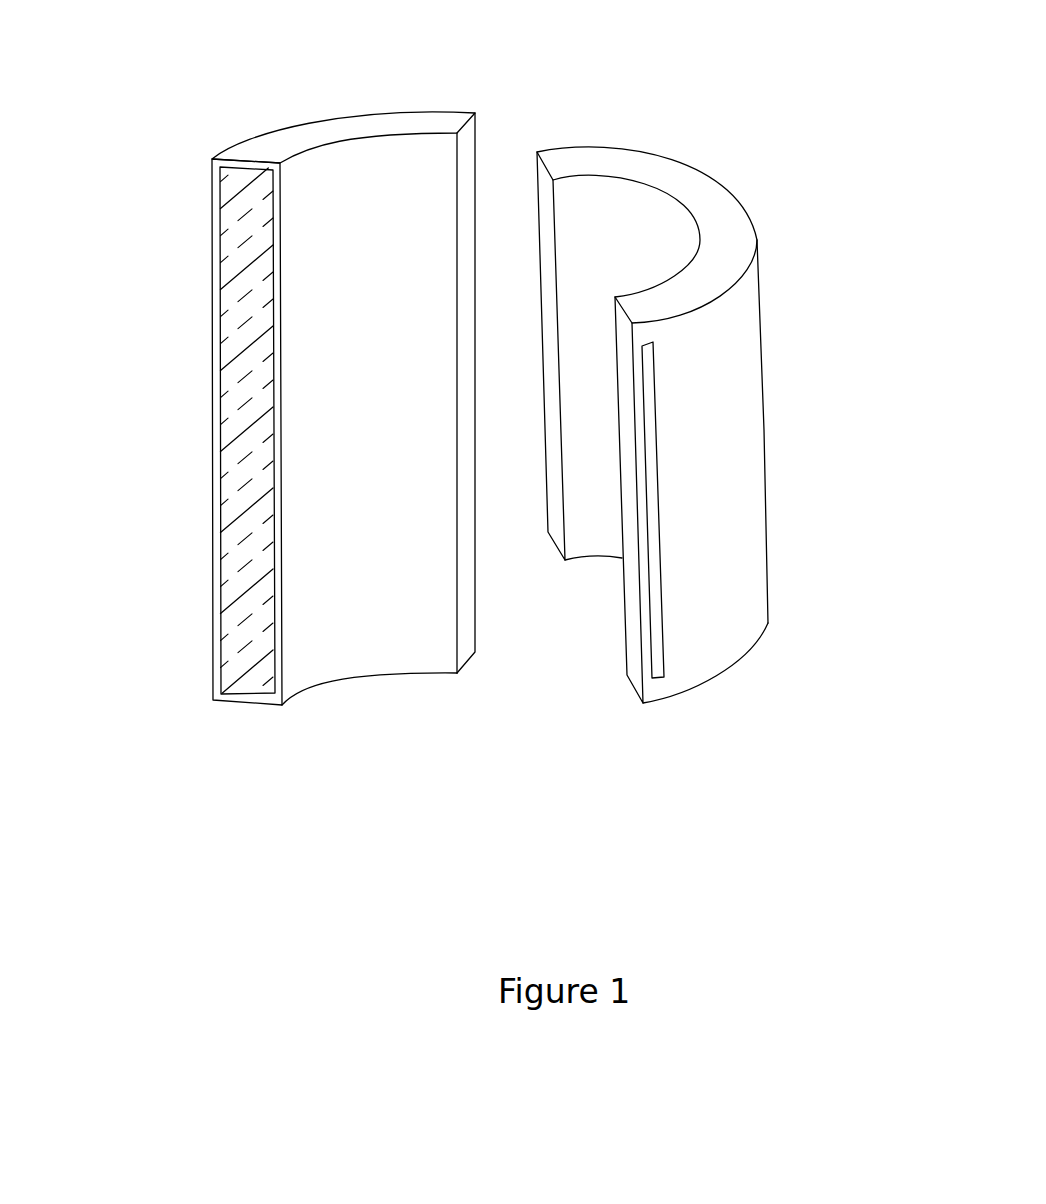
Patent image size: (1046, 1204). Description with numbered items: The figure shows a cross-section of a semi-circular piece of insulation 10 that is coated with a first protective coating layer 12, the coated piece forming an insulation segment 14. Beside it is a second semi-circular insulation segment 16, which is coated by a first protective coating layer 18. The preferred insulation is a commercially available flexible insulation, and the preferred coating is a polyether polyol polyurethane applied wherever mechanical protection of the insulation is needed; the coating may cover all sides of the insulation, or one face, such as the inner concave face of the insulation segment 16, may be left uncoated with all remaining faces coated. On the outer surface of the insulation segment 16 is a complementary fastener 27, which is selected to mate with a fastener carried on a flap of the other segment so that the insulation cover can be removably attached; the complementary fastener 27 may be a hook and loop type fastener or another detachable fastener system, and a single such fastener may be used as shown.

The insulation 10 is at (245, 318).
The first protective coating layer 12 is at (218, 590).
The insulation segment 14 is at (238, 98).
The second semi-circular insulation segment 16 is at (742, 165).
The first protective coating layer 18 is at (723, 508).
The complementary fastener 27 is at (655, 428).